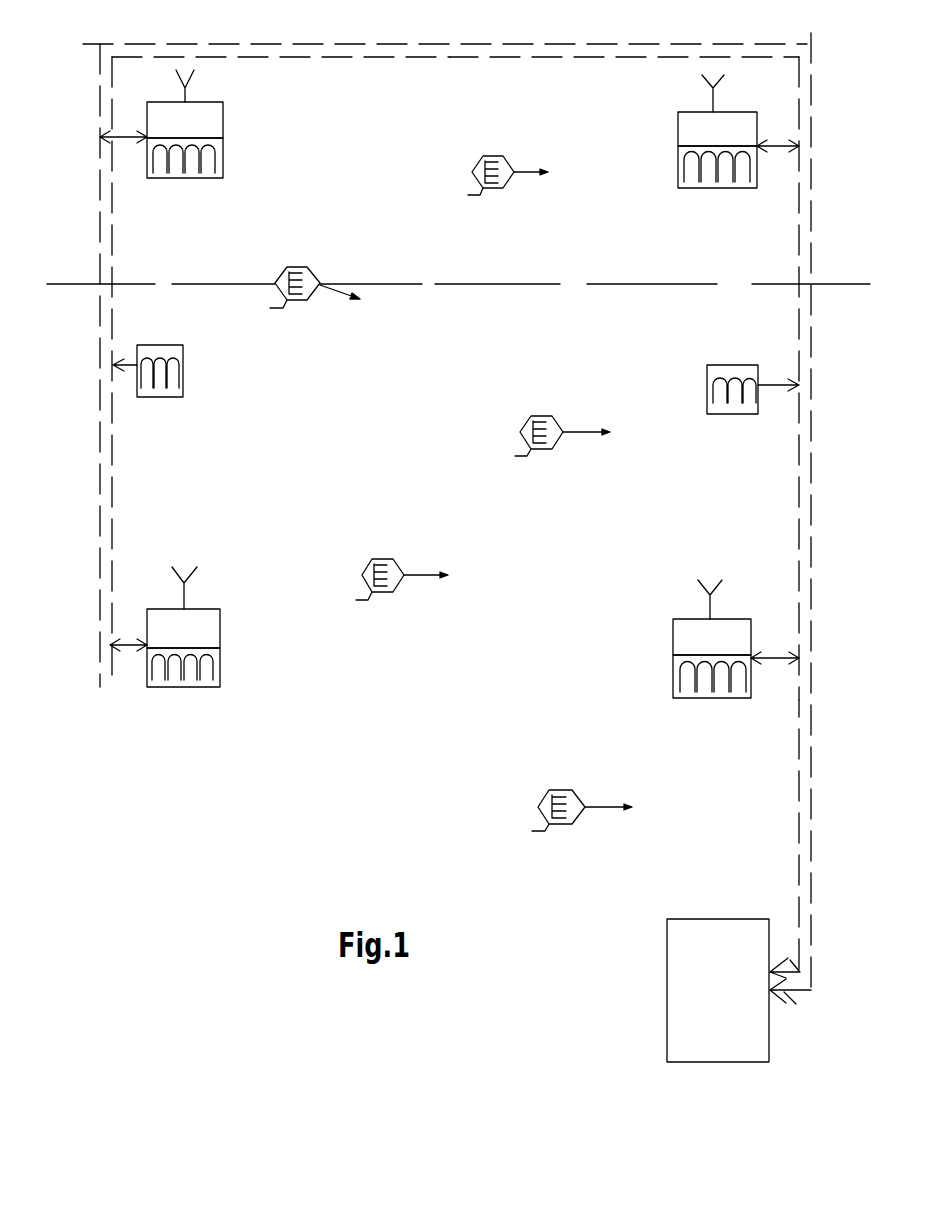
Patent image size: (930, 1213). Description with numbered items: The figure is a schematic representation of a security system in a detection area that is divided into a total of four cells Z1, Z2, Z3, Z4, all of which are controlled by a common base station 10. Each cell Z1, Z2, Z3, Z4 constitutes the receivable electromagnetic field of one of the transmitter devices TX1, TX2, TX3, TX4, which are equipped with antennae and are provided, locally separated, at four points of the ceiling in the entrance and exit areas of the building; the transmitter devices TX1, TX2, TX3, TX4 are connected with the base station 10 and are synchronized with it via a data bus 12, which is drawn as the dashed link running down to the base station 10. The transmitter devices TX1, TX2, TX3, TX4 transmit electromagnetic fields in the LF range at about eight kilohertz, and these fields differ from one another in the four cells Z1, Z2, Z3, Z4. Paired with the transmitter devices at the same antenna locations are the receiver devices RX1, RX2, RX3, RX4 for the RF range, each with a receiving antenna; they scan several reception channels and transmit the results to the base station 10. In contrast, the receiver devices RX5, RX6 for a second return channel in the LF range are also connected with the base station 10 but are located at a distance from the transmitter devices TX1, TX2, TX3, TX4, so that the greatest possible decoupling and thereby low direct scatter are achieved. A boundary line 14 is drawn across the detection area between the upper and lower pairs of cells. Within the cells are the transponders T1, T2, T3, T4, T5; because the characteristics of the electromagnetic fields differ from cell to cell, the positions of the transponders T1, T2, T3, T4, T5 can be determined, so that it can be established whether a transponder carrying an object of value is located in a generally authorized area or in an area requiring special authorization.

The base station 10 is at (681, 1025).
The data bus 12 is at (800, 820).
The zone boundary line 14 is at (818, 283).
The cell Z1 is at (266, 32).
The cell Z2 is at (628, 34).
The cell Z3 is at (136, 485).
The cell Z4 is at (751, 492).
The receiver device RX1 is at (218, 115).
The transmitter device TX1 is at (218, 159).
The receiver device RX2 is at (690, 128).
The transmitter device TX2 is at (690, 181).
The receiver device RX3 is at (205, 622).
The transmitter device TX3 is at (215, 668).
The receiver device RX4 is at (690, 635).
The transmitter device TX4 is at (688, 686).
The receiver device RX5 is at (183, 390).
The receiver device RX6 is at (715, 394).
The transponder T1 is at (505, 157).
The transponder T2 is at (287, 268).
The transponder T3 is at (530, 418).
The transponder T4 is at (371, 559).
The transponder T5 is at (550, 791).